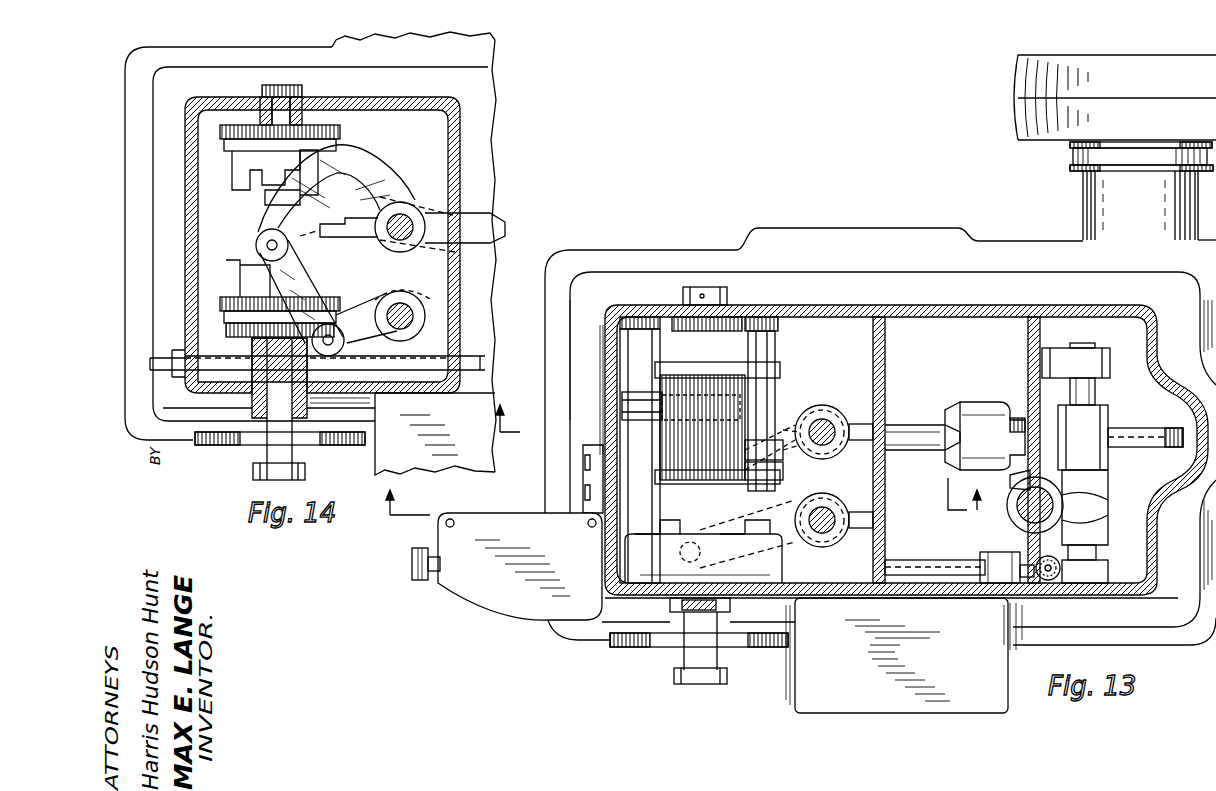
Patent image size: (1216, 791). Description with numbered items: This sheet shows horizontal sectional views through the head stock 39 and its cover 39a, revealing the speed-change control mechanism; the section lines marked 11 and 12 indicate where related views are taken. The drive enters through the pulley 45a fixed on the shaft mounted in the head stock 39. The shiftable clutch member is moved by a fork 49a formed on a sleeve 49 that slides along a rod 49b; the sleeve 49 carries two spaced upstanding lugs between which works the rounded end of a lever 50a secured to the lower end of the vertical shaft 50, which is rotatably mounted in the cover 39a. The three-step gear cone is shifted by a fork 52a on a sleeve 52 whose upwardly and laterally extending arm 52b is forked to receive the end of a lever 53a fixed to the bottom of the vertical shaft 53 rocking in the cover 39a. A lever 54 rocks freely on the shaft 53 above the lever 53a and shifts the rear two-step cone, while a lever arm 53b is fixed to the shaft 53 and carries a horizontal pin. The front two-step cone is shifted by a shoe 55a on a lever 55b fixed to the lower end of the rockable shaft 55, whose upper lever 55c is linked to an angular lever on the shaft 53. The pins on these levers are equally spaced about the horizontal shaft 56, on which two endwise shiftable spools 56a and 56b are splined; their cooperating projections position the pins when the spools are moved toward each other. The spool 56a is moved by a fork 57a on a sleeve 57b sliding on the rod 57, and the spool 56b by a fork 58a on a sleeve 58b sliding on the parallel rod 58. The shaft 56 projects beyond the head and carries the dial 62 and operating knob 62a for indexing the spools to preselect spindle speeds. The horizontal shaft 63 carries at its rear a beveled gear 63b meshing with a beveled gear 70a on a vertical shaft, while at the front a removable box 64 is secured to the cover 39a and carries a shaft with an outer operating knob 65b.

In FIG. 13, the head stock 39 is at (1168, 640).
In FIG. 13, the cover 39a is at (1135, 598).
In FIG. 13, the pulley 45a is at (1018, 92).
In FIG. 13, the sleeve 49 is at (1108, 425).
In FIG. 13, the fork 49a is at (1152, 447).
In FIG. 13, the rod 49b is at (1095, 395).
In FIG. 13, the vertically extending shaft 50 is at (1020, 528).
In FIG. 13, the lever 50a is at (1108, 500).
In FIG. 13, the sleeve 52 is at (1012, 412).
In FIG. 13, the fork 52a is at (1015, 480).
In FIG. 13, the arm 52b is at (972, 402).
In FIG. 14, the vertically extending shaft 53 is at (403, 210).
In FIG. 13, the vertically extending shaft 53 is at (826, 418).
In FIG. 13, the lever 53a is at (940, 425).
In FIG. 14, the lever arm 53b is at (362, 238).
In FIG. 13, the lever arm 53b is at (788, 452).
In FIG. 14, the lever 54 is at (262, 235).
In FIG. 13, the lever 54 is at (792, 412).
In FIG. 14, the rockable shaft 55 is at (407, 298).
In FIG. 13, the rockable shaft 55 is at (828, 505).
In FIG. 14, the shoe 55a is at (310, 287).
In FIG. 14, the lever 55b is at (350, 305).
In FIG. 13, the lever 55b is at (795, 515).
In FIG. 14, the lever 55c is at (350, 150).
In FIG. 14, the shaft 56 is at (292, 235).
In FIG. 13, the shaft 56 is at (718, 368).
In FIG. 14, the spool 56a is at (218, 130).
In FIG. 14, the spool 56b is at (225, 305).
In FIG. 13, the rod 57 is at (776, 355).
In FIG. 13, the fork 57a is at (708, 395).
In FIG. 13, the sleeve 57b is at (780, 440).
In FIG. 13, the rod 58 is at (672, 322).
In FIG. 13, the fork 58a is at (690, 490).
In FIG. 13, the sleeve 58b is at (622, 338).
In FIG. 14, the dial 62 is at (235, 445).
In FIG. 13, the dial 62 is at (645, 647).
In FIG. 14, the operating knob 62a is at (253, 470).
In FIG. 13, the operating knob 62a is at (676, 676).
In FIG. 13, the shaft 63 is at (925, 562).
In FIG. 13, the beveled gear 63b is at (1015, 586).
In FIG. 13, the removable box 64 is at (498, 602).
In FIG. 13, the operating knob 65b is at (418, 580).
In FIG. 13, the beveled gear 70a is at (1060, 586).
In FIG. 14, the section line 11 is at (506, 429).
In FIG. 14, the section line 12 is at (397, 511).
In FIG. 13, the section line 12 is at (967, 508).